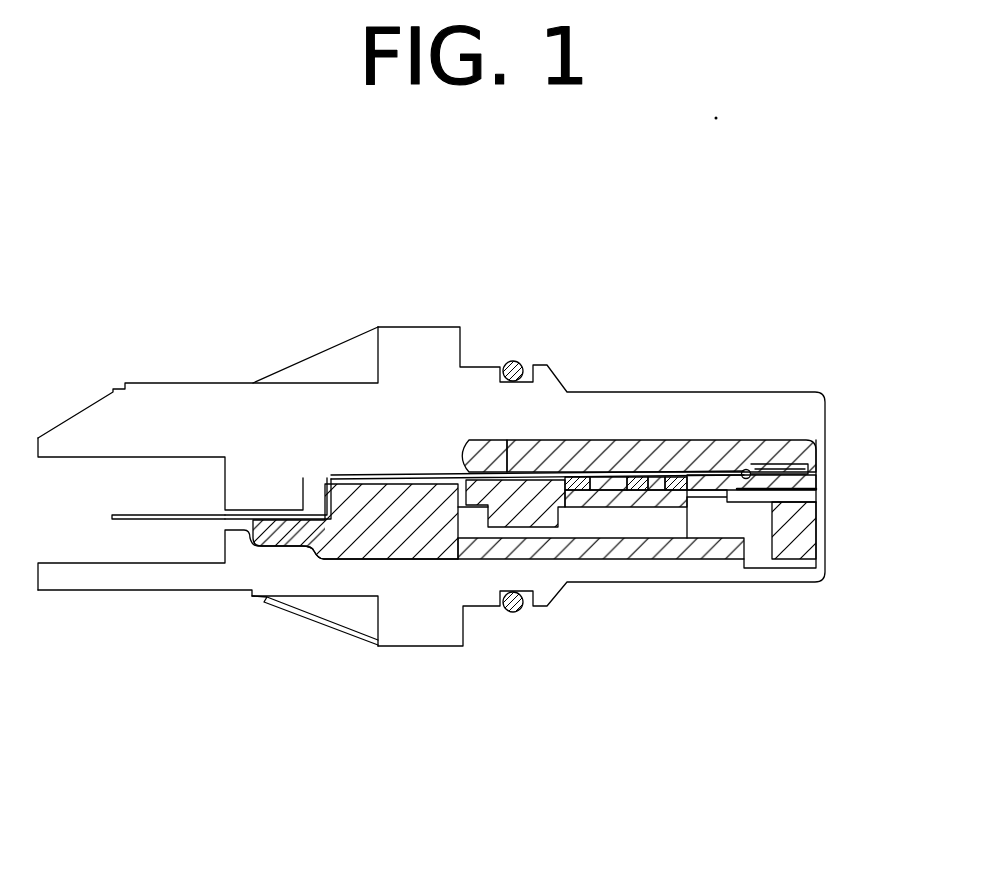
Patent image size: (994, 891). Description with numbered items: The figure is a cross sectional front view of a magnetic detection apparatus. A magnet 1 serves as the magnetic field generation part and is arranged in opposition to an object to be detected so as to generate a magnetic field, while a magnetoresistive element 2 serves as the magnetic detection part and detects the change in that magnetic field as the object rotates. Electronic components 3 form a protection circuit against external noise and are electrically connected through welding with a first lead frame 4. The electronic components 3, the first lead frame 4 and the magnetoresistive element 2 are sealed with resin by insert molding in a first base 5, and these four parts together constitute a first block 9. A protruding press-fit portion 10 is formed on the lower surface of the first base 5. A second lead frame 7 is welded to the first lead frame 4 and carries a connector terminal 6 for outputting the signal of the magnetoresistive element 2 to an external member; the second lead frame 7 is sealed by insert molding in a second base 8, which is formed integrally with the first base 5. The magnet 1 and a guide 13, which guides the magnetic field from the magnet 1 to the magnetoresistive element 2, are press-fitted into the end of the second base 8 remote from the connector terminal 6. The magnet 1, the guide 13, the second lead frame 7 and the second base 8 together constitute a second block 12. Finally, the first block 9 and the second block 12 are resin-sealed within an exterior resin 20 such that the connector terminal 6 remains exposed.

The magnet 1 is at (800, 523).
The magnetoresistive element 2 is at (807, 470).
The electronic components 3 is at (673, 492).
The first lead frame 4 is at (500, 440).
The first base 5 is at (583, 442).
The connector terminal 6 is at (148, 522).
The second lead frame 7 is at (305, 552).
The second base 8 is at (415, 538).
The first block 9 is at (620, 448).
The press-fit portion 10 is at (532, 518).
The second block 12 is at (341, 612).
The guide 13 is at (817, 495).
The exterior resin 20 is at (177, 412).